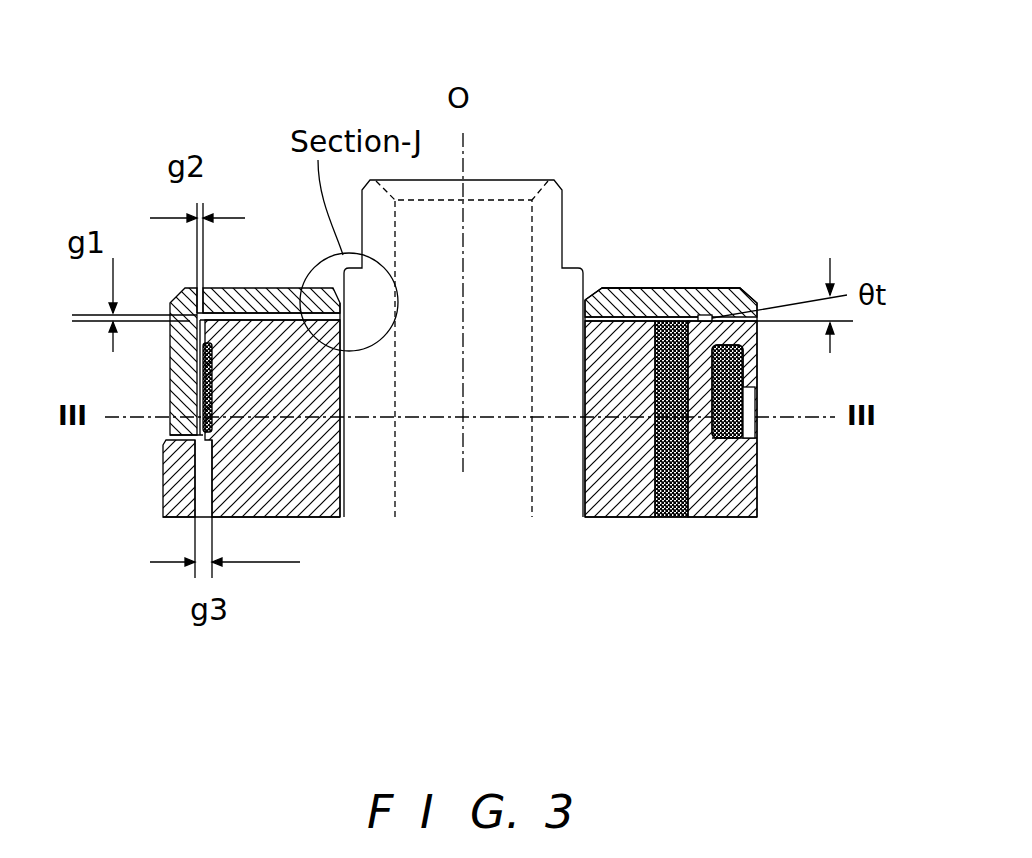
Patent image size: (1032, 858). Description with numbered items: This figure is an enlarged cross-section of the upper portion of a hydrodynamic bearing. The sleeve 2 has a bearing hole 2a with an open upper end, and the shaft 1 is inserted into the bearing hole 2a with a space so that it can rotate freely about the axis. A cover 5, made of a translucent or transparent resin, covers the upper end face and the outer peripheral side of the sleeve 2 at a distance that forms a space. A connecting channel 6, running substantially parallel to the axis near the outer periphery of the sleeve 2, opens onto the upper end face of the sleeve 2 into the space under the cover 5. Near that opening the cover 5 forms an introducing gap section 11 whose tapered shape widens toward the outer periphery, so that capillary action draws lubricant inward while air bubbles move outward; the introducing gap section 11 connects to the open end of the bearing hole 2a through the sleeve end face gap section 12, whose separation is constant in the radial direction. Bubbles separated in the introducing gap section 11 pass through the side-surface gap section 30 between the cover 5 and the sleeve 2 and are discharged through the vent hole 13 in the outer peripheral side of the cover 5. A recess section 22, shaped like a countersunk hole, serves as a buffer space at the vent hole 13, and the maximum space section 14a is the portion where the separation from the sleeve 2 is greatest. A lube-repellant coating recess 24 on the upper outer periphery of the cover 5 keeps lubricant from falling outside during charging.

The shaft 1 is at (495, 228).
The sleeve 2 is at (613, 378).
The bearing hole 2a is at (273, 433).
The cover 5 is at (620, 300).
The connecting channel 6 is at (653, 417).
The introducing gap section 11 is at (667, 320).
The sleeve end face gap section 12 is at (273, 313).
The vent hole 13 is at (753, 418).
The maximum space section 14a is at (717, 420).
The recess section 22 is at (747, 402).
The lube-repellant coating recess 24 is at (678, 287).
The side-surface gap section 30 is at (730, 318).